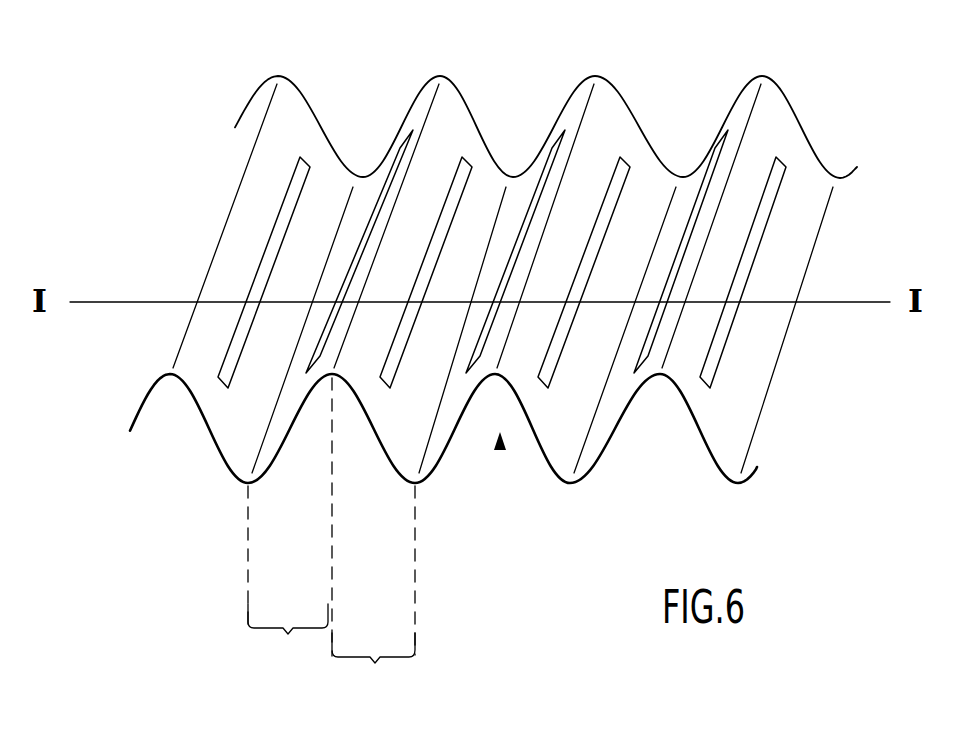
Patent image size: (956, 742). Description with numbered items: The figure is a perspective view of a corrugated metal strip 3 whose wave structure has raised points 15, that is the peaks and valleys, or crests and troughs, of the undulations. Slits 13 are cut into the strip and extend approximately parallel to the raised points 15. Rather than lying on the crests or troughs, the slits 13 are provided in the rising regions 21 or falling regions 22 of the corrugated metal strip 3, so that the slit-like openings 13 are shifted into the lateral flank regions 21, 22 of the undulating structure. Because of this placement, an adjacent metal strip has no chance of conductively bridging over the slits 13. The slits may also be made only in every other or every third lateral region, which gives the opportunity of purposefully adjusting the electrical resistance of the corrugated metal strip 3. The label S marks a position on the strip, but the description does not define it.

The corrugated metal strip 3 is at (201, 228).
The slits 13 is at (391, 166).
The raised points 15 is at (589, 104).
The rising regions 21 is at (290, 524).
The falling regions 22 is at (373, 592).
The direction S is at (485, 483).